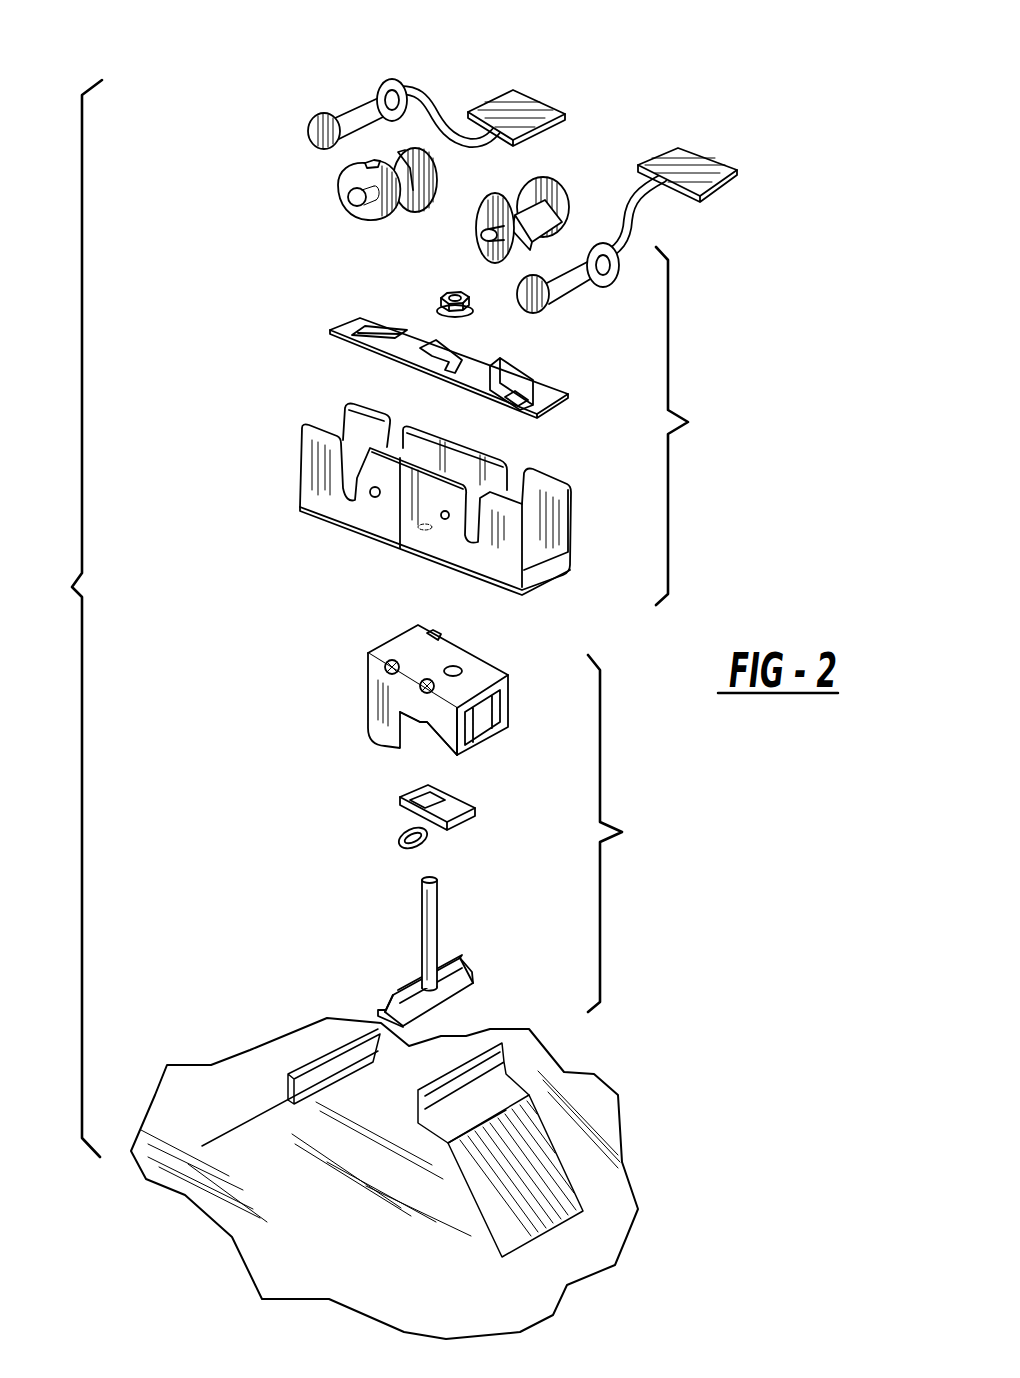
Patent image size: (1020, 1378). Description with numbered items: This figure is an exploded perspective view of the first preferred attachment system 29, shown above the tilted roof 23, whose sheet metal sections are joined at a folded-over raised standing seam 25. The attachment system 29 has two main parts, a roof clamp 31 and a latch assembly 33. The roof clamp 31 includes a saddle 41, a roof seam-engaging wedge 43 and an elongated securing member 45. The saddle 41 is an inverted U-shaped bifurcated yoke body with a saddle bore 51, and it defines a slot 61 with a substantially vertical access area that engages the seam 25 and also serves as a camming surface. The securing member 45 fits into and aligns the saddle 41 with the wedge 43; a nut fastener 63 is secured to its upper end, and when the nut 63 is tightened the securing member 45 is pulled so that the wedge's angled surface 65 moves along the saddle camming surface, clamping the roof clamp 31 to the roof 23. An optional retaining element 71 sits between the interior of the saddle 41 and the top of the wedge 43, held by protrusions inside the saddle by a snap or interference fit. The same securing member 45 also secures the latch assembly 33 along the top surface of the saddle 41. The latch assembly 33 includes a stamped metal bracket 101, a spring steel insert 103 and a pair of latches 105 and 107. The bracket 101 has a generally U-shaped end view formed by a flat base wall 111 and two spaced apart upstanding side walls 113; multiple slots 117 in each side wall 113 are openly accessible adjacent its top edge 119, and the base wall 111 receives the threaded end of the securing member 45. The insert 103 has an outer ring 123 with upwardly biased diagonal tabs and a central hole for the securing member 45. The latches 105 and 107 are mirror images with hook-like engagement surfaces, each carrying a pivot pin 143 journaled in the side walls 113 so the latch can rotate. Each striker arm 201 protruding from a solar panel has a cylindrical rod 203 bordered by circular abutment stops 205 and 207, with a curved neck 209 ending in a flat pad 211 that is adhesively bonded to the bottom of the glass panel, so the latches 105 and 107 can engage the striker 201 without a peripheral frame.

The tilted roof 23 is at (420, 1168).
The raised standing seam 25 is at (485, 1065).
The attachment system 29 is at (72, 618).
The roof clamp 31 is at (616, 833).
The latch assembly 33 is at (685, 426).
The saddle 41 is at (435, 704).
The roof seam-engaging wedge 43 is at (478, 979).
The securing member 45 is at (430, 912).
The saddle bore 51 is at (457, 672).
The slot 61 is at (427, 732).
The nut fastener 63 is at (440, 298).
The angled surface 65 is at (413, 998).
The retaining element 71 is at (453, 793).
The stamped metal bracket 101 is at (420, 493).
The spring steel insert 103 is at (446, 350).
The latch 105 is at (547, 183).
The latch 107 is at (340, 183).
The base wall 111 is at (550, 580).
The side walls 113 is at (510, 537).
The slots 117 is at (380, 433).
The top edge 119 is at (453, 443).
The outer ring 123 is at (390, 330).
The pivot pin 143 is at (497, 222).
The striker arm 201 is at (427, 90).
The cylindrical rod 203 is at (352, 114).
The abutment stop 205 is at (307, 122).
The abutment stop 207 is at (393, 80).
The curved neck 209 is at (443, 107).
The flat pad 211 is at (533, 107).